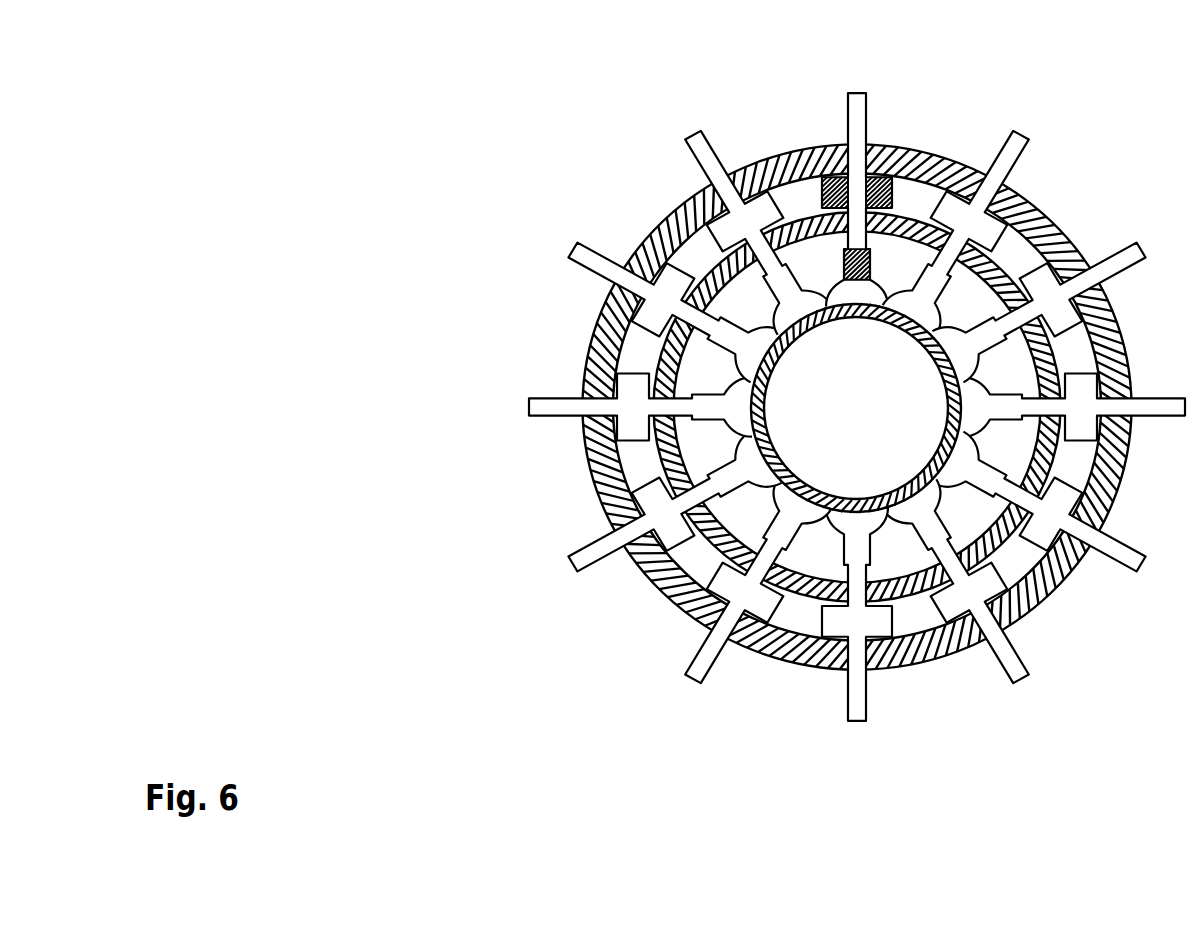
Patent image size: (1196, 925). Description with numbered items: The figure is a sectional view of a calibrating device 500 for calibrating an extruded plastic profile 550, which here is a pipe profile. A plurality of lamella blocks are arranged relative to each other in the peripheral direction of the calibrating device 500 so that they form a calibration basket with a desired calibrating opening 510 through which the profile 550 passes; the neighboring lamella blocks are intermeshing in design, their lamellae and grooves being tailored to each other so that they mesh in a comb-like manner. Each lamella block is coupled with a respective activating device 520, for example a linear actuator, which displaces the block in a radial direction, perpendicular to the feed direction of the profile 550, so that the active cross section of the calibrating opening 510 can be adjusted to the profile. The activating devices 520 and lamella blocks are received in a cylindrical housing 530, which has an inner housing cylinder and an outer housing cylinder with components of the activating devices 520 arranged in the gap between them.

The calibrating device 500 is at (880, 823).
The calibrating opening 510 is at (880, 402).
The activating device 520 is at (793, 160).
The housing 530 is at (638, 226).
The extruded plastic profile 550 is at (765, 438).